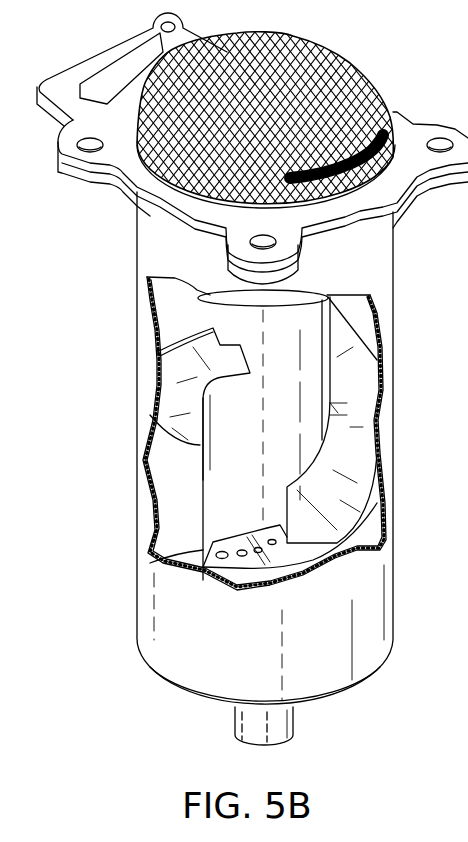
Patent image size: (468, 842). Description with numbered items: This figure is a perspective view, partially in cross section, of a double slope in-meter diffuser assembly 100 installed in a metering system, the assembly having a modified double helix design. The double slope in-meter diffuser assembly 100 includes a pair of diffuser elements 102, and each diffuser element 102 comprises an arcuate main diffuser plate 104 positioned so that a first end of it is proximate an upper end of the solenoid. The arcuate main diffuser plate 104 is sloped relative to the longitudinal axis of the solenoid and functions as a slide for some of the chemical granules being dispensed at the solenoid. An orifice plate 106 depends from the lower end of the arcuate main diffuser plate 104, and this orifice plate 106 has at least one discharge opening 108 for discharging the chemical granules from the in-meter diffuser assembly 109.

The double slope in-meter diffuser assembly 100 is at (173, 327).
The diffuser element 102 is at (183, 373).
The arcuate main diffuser plate 104 is at (168, 443).
The orifice plate 106 is at (233, 555).
The discharge opening 108 is at (163, 553).
The in-meter diffuser assembly 109 is at (380, 668).